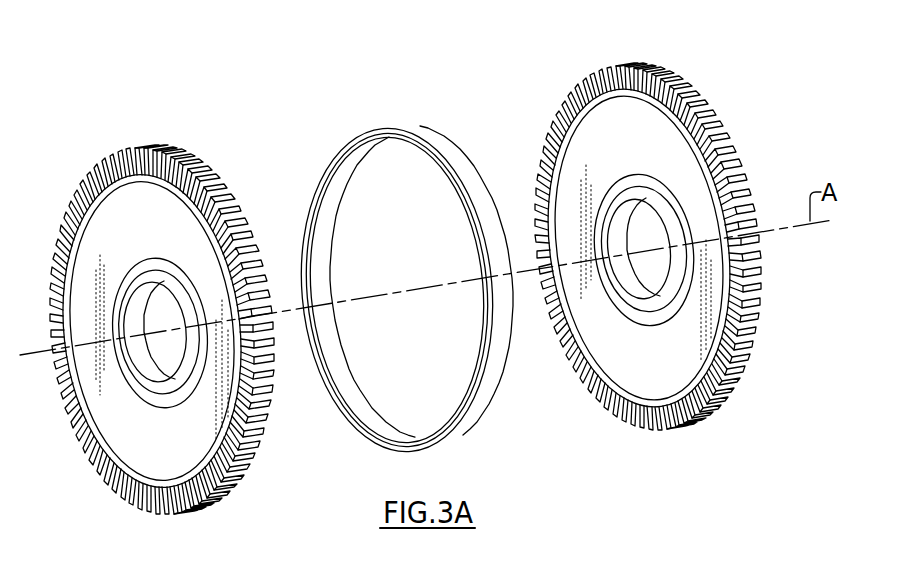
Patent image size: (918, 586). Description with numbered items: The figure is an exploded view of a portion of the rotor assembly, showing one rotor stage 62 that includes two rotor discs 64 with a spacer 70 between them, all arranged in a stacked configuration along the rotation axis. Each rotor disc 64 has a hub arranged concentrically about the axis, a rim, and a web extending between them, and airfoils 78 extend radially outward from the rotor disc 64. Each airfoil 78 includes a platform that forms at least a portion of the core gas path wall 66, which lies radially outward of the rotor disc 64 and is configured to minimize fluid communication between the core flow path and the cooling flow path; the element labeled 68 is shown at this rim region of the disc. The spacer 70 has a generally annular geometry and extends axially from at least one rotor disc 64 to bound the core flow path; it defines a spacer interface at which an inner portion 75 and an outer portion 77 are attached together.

The rotor stage 62 is at (452, 271).
The rotor disc 64 is at (92, 236).
The core gas path wall 66 is at (117, 483).
The blade platform / rim 68 is at (203, 187).
The spacer 70 is at (400, 268).
The inner portion 75 is at (437, 170).
The outer portion 77 is at (453, 165).
The airfoil 78 is at (128, 152).